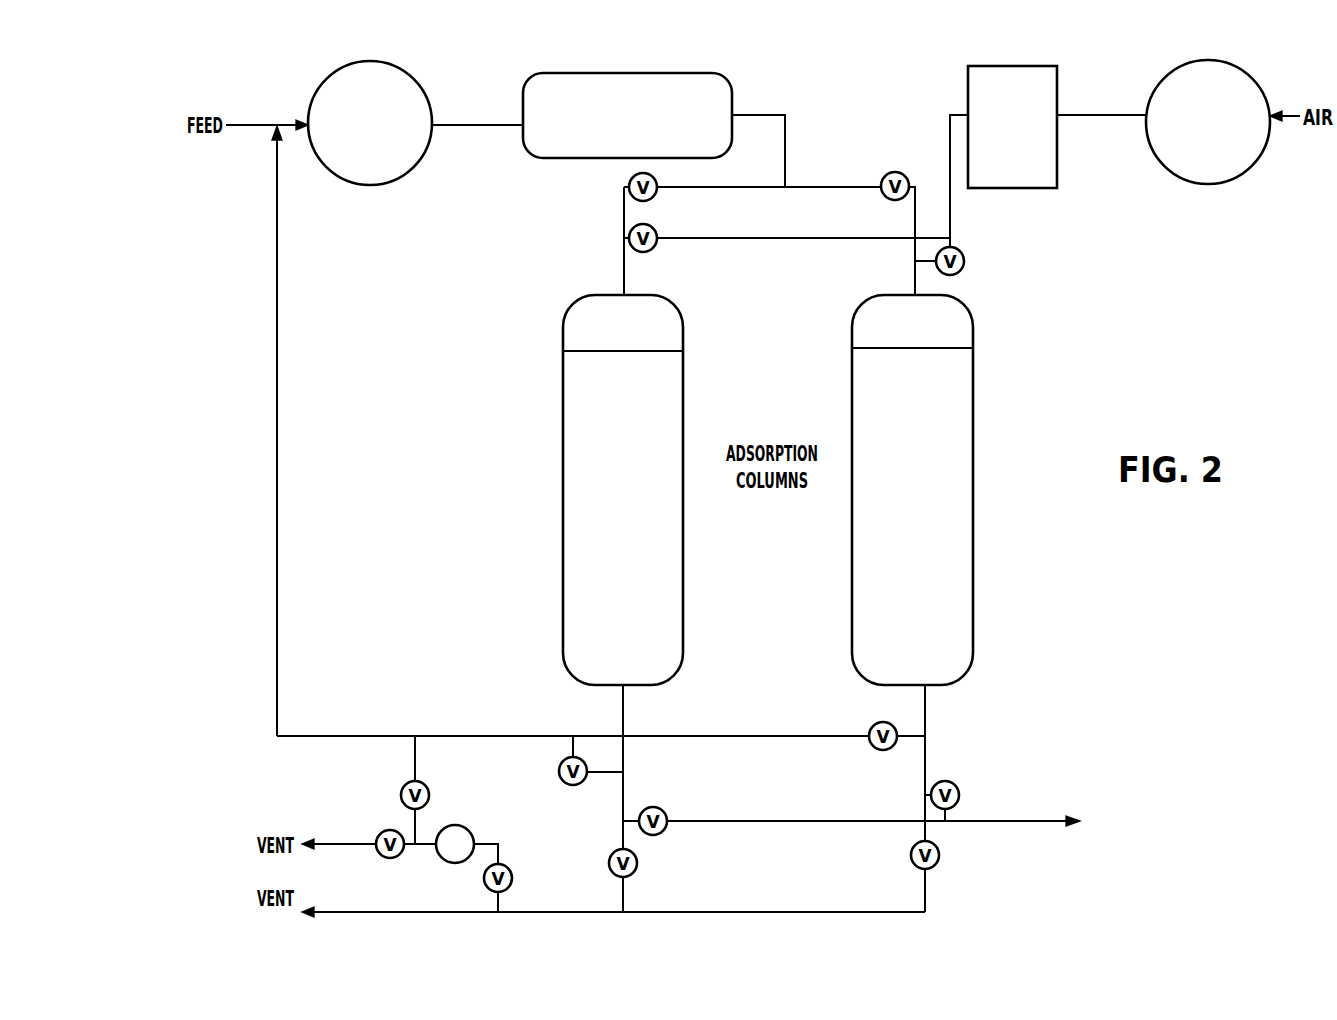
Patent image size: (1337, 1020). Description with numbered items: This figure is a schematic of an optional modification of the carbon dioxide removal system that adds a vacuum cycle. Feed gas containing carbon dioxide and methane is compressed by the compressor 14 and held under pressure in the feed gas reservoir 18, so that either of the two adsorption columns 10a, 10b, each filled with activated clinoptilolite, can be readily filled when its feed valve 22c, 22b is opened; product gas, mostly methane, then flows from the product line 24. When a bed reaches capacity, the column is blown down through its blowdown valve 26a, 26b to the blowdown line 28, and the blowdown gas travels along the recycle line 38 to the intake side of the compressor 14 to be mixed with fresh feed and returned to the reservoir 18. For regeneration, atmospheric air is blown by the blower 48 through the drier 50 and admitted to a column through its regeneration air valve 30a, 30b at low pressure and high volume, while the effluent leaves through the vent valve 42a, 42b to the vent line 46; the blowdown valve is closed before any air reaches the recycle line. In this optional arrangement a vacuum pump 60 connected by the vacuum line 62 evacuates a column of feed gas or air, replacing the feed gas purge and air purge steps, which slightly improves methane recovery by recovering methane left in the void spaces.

The compressor 14 is at (370, 123).
The feed gas reservoir 18 is at (627, 115).
The drier 50 is at (1012, 127).
The blower 48 is at (1208, 122).
The feed valve 22c is at (628, 181).
The feed valve 22b is at (882, 175).
The regeneration air valve 30a is at (659, 237).
The regeneration air valve 30b is at (965, 261).
The adsorption column 10a is at (623, 490).
The adsorption column 10b is at (912, 490).
The recycle line 38 is at (277, 530).
The blowdown line 28 is at (478, 736).
The blowdown valve 26a is at (560, 764).
The blowdown valve 26b is at (869, 724).
The vacuum pump 60 is at (460, 824).
The vacuum line 62 is at (502, 851).
The vent line 46 is at (448, 915).
The product line 24 is at (1008, 819).
The vent valve 42a is at (616, 870).
The vent valve 42b is at (911, 865).